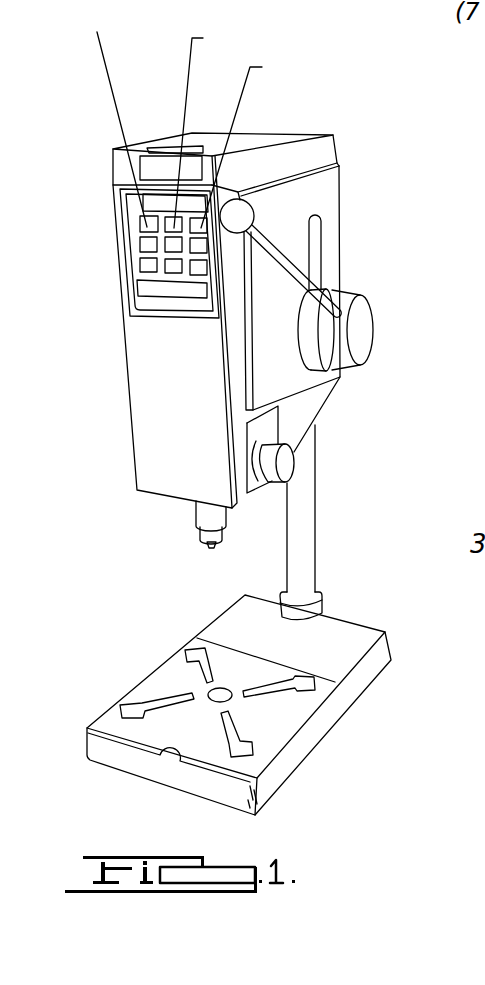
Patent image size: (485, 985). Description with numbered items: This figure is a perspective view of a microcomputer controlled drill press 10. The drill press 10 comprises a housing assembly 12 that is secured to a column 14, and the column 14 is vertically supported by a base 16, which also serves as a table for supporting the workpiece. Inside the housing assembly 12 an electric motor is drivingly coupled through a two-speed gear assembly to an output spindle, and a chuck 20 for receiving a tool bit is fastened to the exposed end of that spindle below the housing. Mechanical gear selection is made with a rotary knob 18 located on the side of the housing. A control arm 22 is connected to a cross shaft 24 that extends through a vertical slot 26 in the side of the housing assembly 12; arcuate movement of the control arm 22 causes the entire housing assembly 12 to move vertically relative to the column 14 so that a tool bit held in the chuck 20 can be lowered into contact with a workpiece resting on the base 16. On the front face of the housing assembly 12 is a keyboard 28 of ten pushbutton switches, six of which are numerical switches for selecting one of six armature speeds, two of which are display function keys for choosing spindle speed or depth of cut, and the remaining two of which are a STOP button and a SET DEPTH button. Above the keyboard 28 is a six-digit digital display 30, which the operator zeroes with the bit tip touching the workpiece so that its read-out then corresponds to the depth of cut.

The drill press 10 is at (140, 517).
The housing assembly 12 is at (338, 185).
The column 14 is at (297, 547).
The base 16 is at (283, 724).
The rotary knob 18 is at (283, 463).
The chuck 20 is at (196, 533).
The control arm 22 is at (295, 277).
The cross shaft 24 is at (364, 325).
The vertical slot 26 is at (315, 253).
The keyboard 28 is at (138, 249).
The digital display 30 is at (146, 199).